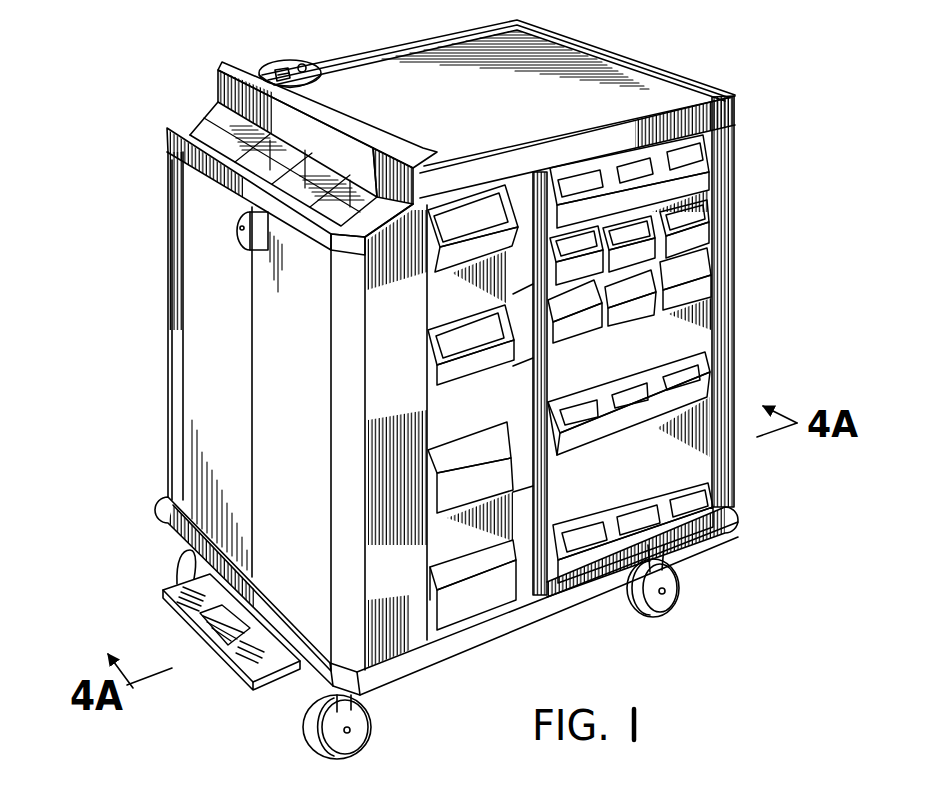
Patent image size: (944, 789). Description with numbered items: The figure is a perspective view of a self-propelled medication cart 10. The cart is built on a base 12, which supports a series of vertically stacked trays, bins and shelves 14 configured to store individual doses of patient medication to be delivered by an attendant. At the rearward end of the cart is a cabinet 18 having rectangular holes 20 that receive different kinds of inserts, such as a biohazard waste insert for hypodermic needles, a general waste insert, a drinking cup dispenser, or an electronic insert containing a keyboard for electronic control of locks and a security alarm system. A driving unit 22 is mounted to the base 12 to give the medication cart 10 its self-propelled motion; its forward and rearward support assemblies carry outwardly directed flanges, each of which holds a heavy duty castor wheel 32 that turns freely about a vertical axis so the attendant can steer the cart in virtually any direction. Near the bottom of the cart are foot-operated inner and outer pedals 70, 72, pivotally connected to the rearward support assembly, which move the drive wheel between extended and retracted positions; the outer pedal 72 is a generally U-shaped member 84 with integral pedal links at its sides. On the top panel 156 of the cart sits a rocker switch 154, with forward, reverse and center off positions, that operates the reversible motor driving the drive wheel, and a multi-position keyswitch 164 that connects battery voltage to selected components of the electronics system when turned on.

The self-propelled medication cart 10 is at (758, 72).
The base 12 is at (502, 631).
The trays, bins and shelves 14 is at (708, 221).
The cabinet 18 is at (180, 119).
The rectangular holes 20 is at (215, 152).
The driving unit 22 is at (701, 577).
The castor wheel 32 is at (178, 559).
The inner pedal 70 is at (245, 618).
The outer pedal 72 is at (163, 601).
The U-shaped member 84 is at (237, 658).
The rocker switch 154 is at (282, 63).
The top panel 156 is at (494, 105).
The multi-position keyswitch 164 is at (303, 62).